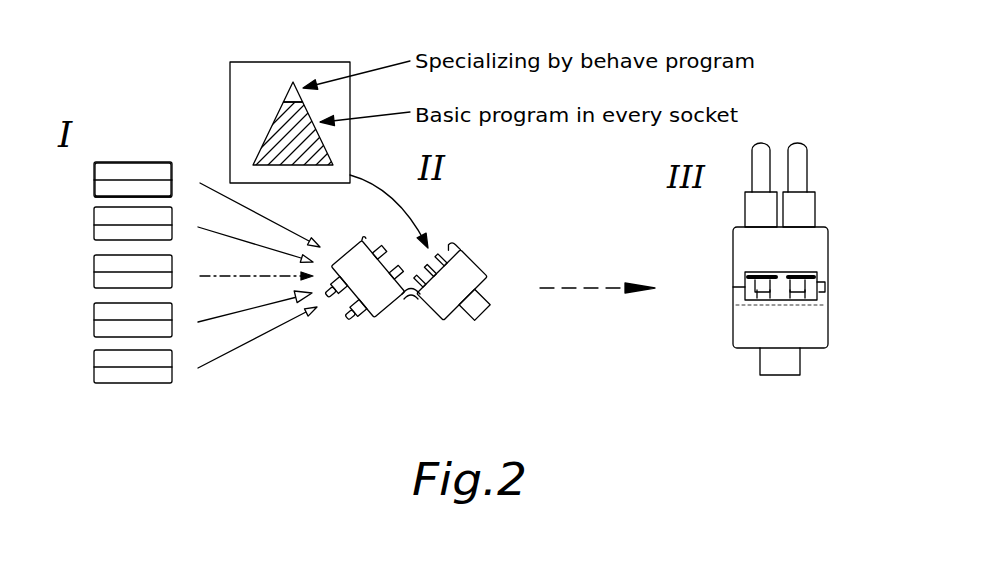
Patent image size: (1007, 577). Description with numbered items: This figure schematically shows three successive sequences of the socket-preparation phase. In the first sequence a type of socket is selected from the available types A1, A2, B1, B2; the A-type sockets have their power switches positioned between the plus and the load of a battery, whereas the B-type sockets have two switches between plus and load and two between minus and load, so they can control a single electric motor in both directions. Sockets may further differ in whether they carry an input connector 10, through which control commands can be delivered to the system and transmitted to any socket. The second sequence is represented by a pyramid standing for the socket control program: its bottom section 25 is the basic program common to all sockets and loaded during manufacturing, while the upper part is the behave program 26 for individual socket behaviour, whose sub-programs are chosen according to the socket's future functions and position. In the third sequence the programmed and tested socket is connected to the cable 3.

The cable 3 is at (815, 291).
The input connector 10 is at (473, 315).
The bottom section of the pyramid 25 is at (280, 132).
The behave program 26 is at (292, 100).
The socket type A1 is at (83, 182).
The socket type A2 is at (82, 227).
The socket type B1 is at (78, 273).
The socket type B2 is at (77, 320).